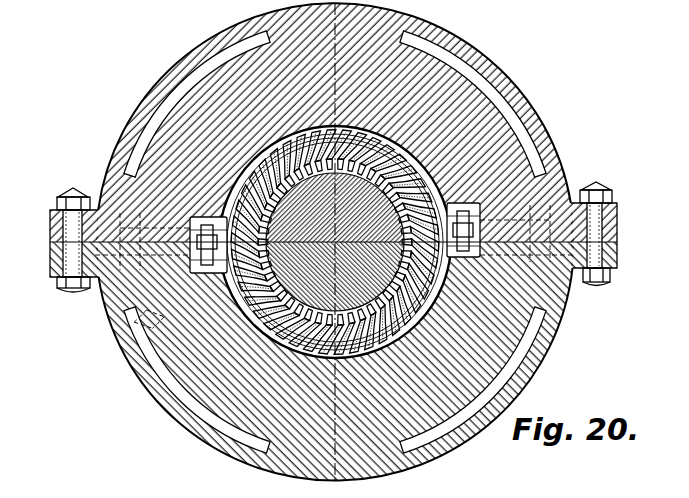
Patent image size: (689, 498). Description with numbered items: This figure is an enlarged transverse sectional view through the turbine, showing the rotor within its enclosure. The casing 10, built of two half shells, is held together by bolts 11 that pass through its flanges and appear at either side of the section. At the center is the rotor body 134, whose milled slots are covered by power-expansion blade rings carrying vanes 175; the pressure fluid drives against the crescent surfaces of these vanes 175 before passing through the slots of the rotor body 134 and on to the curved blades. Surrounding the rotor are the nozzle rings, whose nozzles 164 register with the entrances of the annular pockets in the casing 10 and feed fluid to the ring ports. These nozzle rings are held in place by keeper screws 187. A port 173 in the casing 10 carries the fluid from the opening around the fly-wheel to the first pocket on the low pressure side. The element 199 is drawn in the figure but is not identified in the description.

The casing 10 is at (490, 59).
The bolts 11 is at (73, 189).
The rotor body 134 is at (335, 242).
The nozzles 164 is at (445, 158).
The port 173 is at (510, 116).
The vanes 175 is at (247, 182).
The keeper screws 187 is at (147, 320).
The toothed ring 199 is at (328, 178).